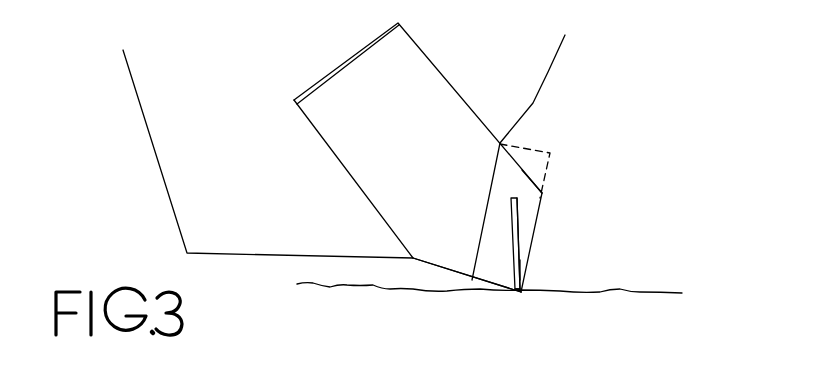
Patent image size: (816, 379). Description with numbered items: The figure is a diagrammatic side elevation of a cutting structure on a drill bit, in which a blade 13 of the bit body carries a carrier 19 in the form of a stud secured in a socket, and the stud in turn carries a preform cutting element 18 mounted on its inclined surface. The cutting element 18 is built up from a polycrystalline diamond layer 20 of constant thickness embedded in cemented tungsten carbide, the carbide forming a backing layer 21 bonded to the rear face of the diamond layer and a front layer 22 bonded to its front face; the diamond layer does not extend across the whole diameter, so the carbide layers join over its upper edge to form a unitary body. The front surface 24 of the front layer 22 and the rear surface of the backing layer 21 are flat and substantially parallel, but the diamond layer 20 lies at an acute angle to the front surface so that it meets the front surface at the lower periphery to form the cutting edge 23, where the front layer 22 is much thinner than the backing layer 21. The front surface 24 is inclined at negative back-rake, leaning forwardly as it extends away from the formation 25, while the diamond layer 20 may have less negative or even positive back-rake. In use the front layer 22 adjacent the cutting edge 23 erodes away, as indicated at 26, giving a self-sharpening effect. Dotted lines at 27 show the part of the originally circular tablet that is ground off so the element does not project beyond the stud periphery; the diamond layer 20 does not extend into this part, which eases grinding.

The blade 13 is at (185, 163).
The carrier 19 is at (420, 107).
The part of the circular tablet to be ground off 27 is at (535, 143).
The preform cutting element 18 is at (533, 179).
The front layer 22 is at (528, 220).
The polycrystalline diamond layer 20 is at (521, 242).
The front surface 24 is at (532, 247).
The eroded region 26 is at (524, 259).
The cutting edge 23 is at (520, 291).
The backing layer 21 is at (497, 252).
The formation 25 is at (648, 292).